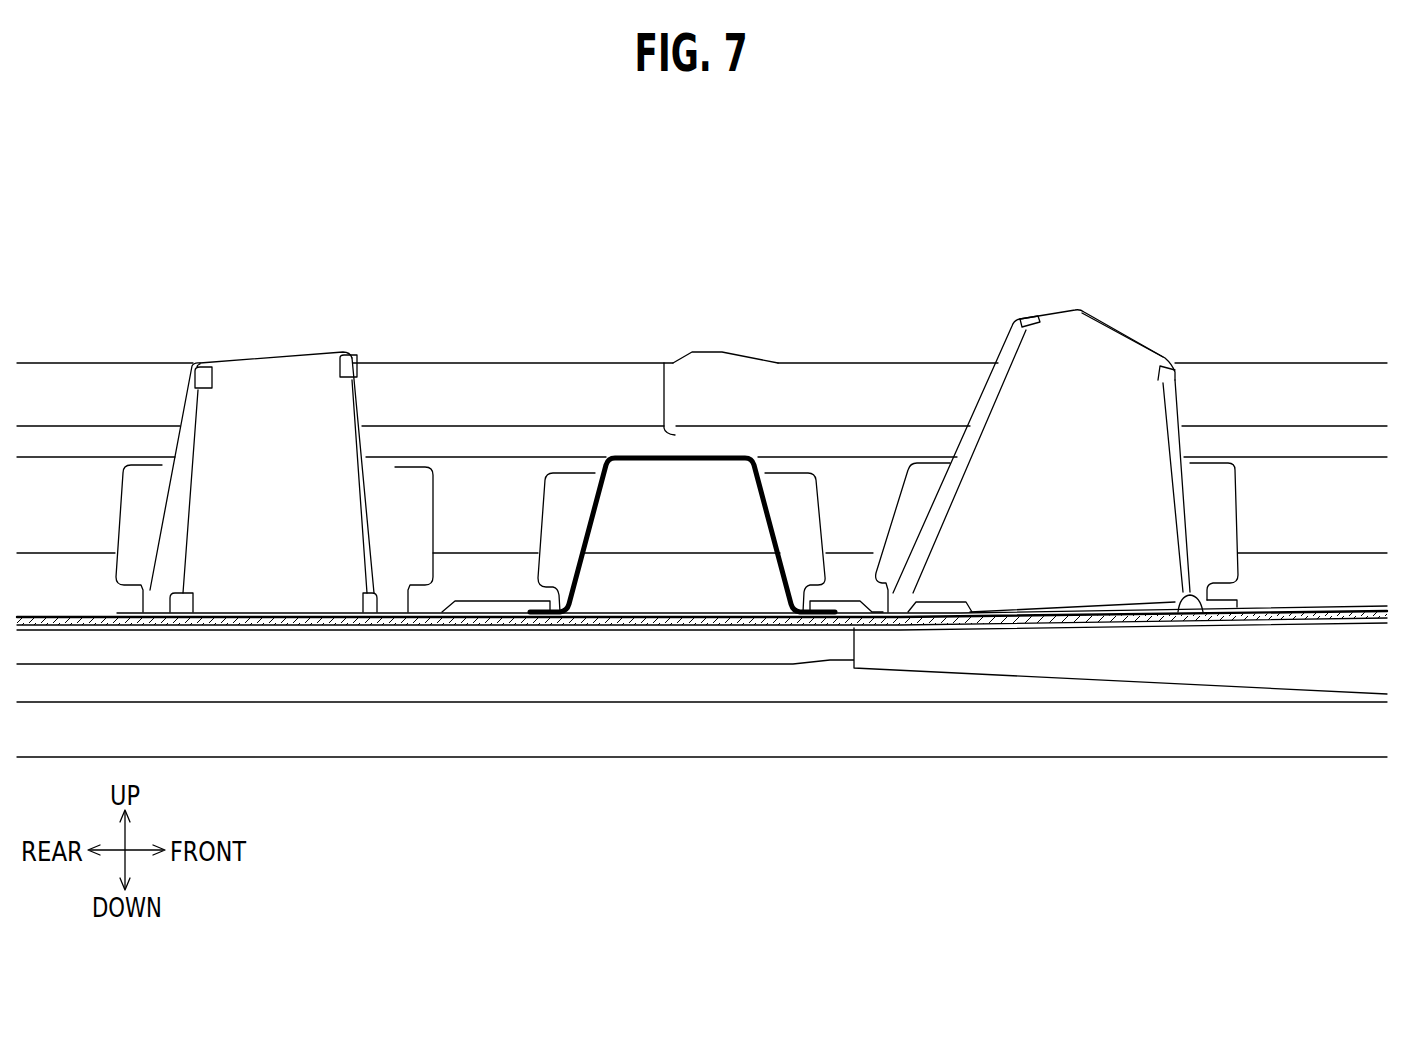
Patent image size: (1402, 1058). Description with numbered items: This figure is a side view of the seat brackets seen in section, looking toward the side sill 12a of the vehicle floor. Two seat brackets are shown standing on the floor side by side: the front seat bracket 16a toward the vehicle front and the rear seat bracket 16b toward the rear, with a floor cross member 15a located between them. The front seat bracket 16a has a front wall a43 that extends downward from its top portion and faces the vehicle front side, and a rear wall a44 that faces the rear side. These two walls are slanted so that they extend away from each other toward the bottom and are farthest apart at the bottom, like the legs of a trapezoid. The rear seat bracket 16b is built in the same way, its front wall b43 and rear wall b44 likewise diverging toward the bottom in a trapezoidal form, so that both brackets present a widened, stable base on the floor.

The side sill 12a is at (602, 395).
The floor cross member 15a is at (723, 450).
The front seat bracket 16a is at (1065, 431).
The rear seat bracket 16b is at (284, 449).
The front wall a43 is at (1183, 442).
The rear wall a44 is at (993, 395).
The front wall b43 is at (367, 444).
The rear wall b44 is at (178, 448).